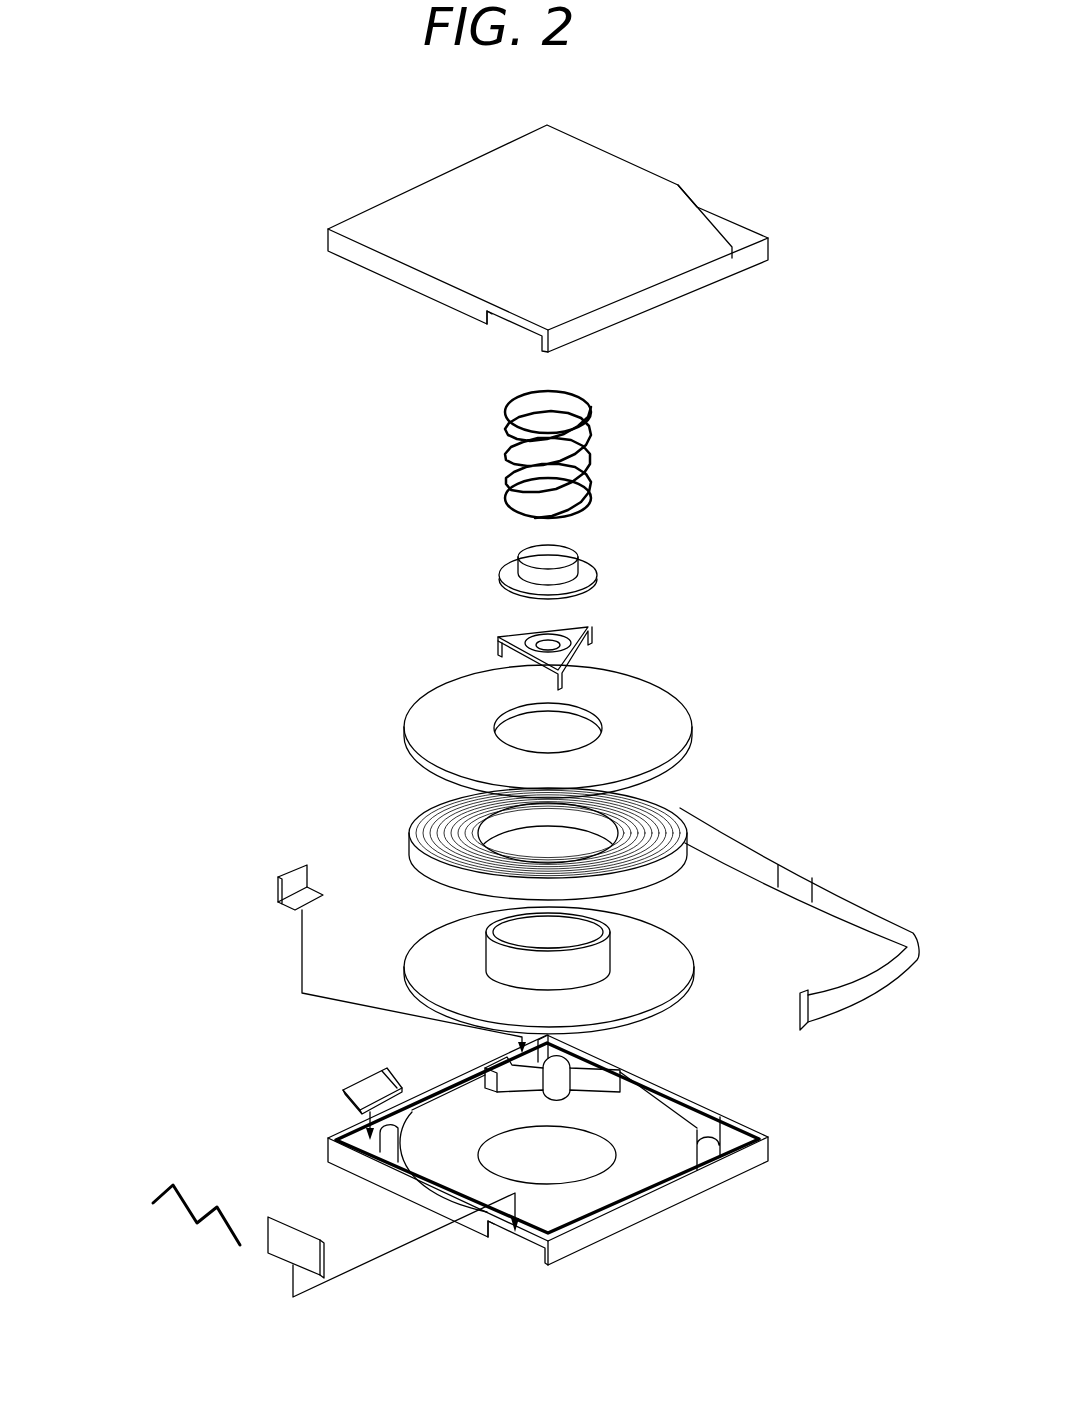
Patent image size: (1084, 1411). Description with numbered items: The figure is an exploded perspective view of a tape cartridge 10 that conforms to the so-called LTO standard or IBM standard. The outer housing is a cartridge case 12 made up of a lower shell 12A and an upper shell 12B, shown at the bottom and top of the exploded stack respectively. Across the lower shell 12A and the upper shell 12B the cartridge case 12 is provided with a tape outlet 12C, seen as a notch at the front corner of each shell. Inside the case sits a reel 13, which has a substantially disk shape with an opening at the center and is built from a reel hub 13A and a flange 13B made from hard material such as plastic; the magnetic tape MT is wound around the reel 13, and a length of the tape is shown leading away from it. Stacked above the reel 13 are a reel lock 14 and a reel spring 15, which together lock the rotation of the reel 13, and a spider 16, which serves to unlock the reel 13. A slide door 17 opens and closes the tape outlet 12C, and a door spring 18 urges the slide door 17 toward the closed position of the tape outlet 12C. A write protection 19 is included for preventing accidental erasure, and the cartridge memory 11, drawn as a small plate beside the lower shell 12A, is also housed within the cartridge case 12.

The tape cartridge 10 is at (753, 118).
The cartridge memory 11 is at (377, 1076).
The cartridge case 12 is at (134, 672).
The lower shell 12A is at (328, 1150).
The upper shell 12B is at (378, 273).
The tape outlet 12C is at (492, 320).
The reel 13 is at (312, 738).
The reel hub 13A is at (413, 943).
The flange 13B is at (405, 755).
The reel lock 14 is at (594, 575).
The reel spring 15 is at (589, 441).
The spider 16 is at (589, 626).
The slide door 17 is at (290, 1268).
The door spring 18 is at (188, 1220).
The write protection 19 is at (296, 869).
The magnetic tape MT is at (662, 878).